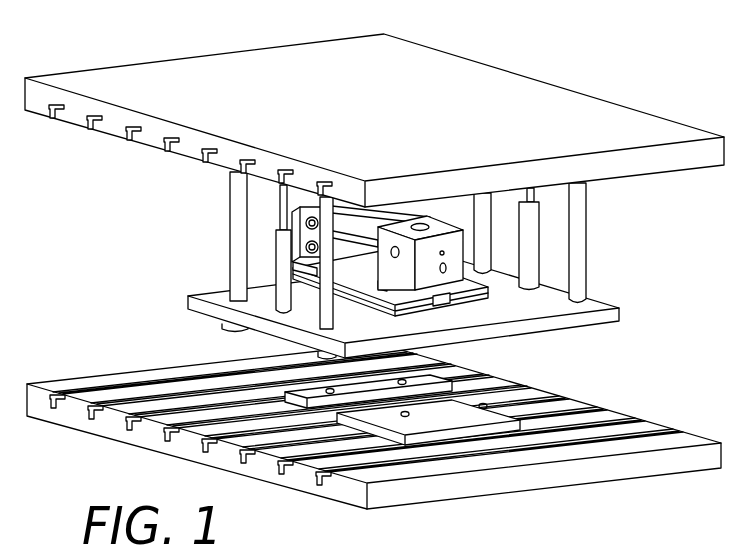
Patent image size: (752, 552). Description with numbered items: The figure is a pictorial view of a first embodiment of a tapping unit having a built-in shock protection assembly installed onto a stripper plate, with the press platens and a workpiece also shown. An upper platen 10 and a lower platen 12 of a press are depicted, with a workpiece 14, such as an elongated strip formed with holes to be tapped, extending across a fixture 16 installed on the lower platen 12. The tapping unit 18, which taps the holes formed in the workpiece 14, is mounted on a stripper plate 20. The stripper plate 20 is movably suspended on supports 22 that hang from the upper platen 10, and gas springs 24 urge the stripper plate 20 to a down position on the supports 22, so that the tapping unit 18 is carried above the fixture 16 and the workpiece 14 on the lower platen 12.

The upper platen 10 is at (378, 41).
The lower platen 12 is at (564, 486).
The workpiece 14 is at (185, 423).
The fixture 16 is at (519, 389).
The tapping unit 18 is at (459, 248).
The stripper plate 20 is at (188, 300).
The supports 22 is at (232, 188).
The gas springs 24 is at (277, 248).